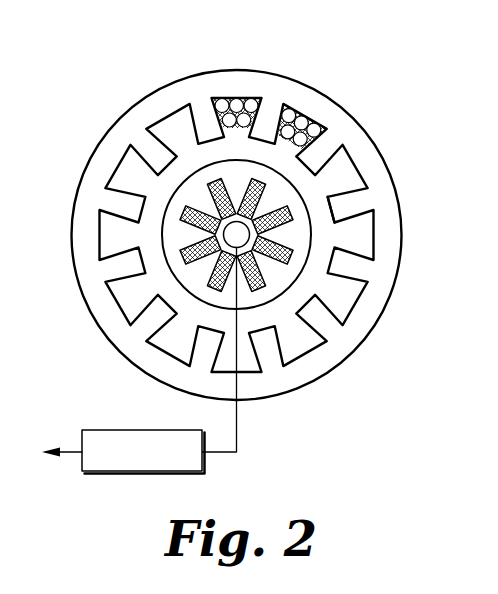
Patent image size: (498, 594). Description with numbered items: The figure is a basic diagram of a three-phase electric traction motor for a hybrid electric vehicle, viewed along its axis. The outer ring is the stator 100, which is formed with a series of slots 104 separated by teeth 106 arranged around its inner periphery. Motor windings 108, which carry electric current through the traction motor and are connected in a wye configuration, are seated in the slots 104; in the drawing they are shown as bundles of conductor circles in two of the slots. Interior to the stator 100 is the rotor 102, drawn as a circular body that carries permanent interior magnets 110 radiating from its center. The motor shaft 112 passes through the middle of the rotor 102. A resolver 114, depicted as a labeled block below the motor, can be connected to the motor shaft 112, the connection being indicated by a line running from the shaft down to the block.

The stator 100 is at (367, 132).
The rotor 102 is at (253, 307).
The slots 104 is at (352, 295).
The teeth 106 is at (360, 199).
The motor windings 108 is at (237, 98).
The permanent interior magnets 110 is at (182, 257).
The motor shaft 112 is at (232, 230).
The resolver 114 is at (116, 430).